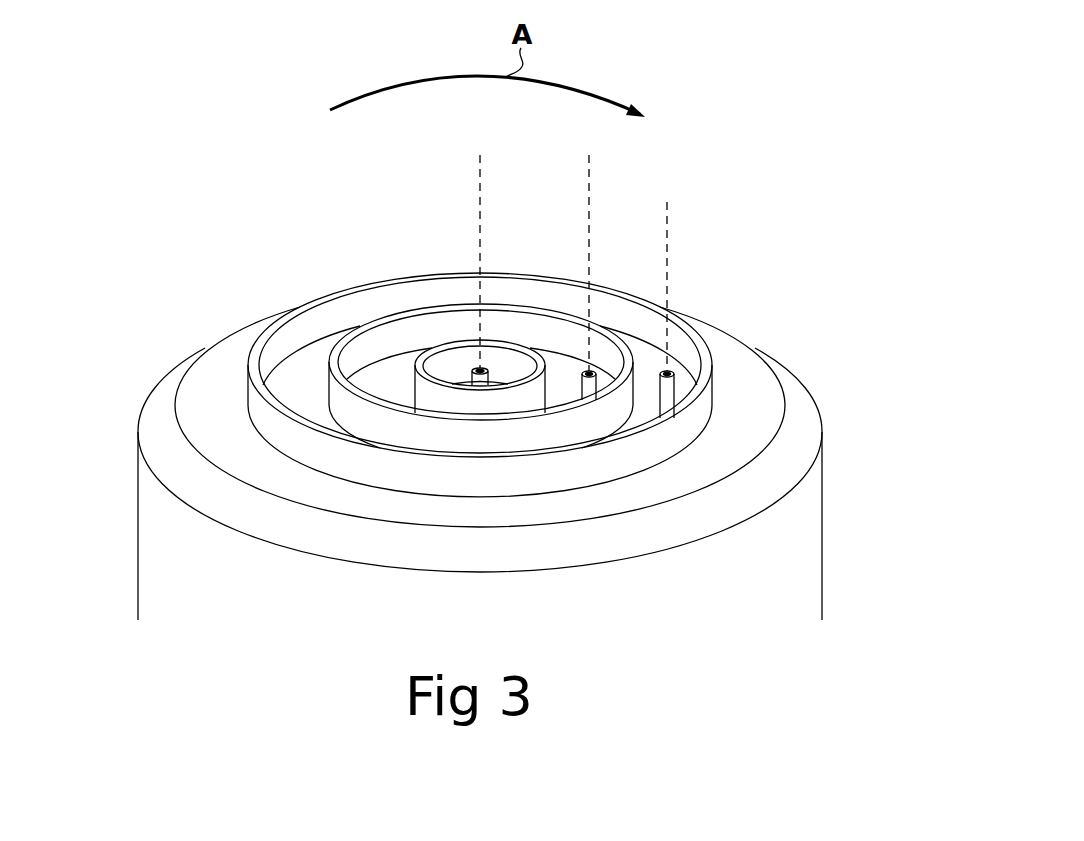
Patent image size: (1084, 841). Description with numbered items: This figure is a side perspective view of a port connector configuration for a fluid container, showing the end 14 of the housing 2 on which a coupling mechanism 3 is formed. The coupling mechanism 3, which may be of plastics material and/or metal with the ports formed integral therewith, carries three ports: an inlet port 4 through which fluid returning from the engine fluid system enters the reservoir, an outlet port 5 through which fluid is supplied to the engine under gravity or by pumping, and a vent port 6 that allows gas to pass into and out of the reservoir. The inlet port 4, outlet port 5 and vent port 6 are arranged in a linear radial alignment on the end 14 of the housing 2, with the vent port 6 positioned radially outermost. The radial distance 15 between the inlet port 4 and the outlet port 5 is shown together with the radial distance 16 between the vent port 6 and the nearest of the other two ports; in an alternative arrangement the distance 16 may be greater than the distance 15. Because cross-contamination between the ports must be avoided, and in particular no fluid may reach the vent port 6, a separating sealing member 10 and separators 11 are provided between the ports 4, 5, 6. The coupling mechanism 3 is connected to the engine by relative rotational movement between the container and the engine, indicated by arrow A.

The housing 2 is at (137, 522).
The coupling mechanism 3 is at (276, 321).
The inlet port 4 is at (481, 387).
The outlet port 5 is at (590, 400).
The vent port 6 is at (667, 418).
The separating sealing member 10 is at (670, 311).
The separators 11 is at (343, 332).
The end of the housing 14 is at (838, 514).
The radial distance between inlet port and outlet port 15 is at (480, 156).
The radial distance between vent port and nearest port 16 is at (668, 204).